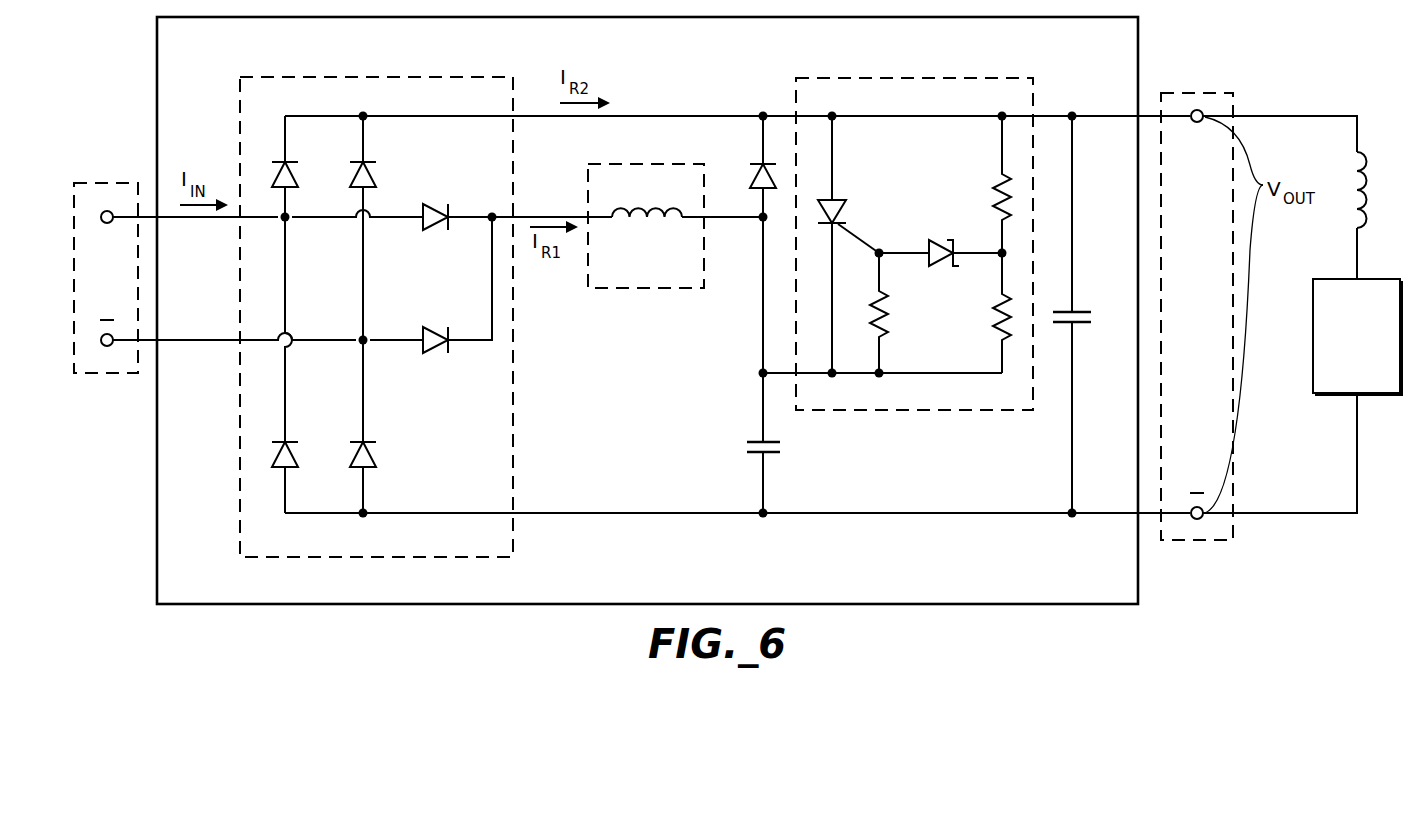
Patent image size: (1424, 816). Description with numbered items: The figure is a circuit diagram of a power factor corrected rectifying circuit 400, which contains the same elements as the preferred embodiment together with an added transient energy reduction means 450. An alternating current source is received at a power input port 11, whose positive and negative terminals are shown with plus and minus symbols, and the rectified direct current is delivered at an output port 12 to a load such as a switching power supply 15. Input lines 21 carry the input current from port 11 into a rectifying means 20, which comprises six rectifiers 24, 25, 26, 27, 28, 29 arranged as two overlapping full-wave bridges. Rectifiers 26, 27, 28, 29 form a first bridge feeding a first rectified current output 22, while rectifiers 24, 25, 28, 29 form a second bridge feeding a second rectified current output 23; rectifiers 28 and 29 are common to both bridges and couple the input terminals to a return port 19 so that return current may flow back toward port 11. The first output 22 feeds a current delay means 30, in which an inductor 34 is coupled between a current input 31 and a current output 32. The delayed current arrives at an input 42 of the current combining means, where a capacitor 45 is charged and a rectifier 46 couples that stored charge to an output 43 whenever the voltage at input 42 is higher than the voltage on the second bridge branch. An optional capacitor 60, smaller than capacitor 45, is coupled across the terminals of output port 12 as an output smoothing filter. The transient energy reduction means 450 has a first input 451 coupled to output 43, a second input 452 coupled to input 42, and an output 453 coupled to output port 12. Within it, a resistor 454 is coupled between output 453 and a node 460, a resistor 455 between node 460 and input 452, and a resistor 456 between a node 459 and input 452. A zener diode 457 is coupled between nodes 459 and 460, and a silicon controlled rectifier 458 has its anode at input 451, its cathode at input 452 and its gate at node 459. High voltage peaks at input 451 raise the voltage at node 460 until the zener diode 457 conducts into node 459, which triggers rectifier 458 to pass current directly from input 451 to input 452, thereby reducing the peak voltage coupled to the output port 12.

The power factor corrected rectifying circuit 400 is at (148, 575).
The power input port 11 is at (127, 172).
The output port 12 is at (1192, 80).
The switching power supply 15 is at (1340, 279).
The return port 19 is at (513, 512).
The rectifying means 20 is at (266, 66).
The input lines 21 is at (232, 338).
The first rectified current output 22 is at (513, 215).
The second rectified current output 23 is at (513, 114).
The rectifier 24 is at (289, 161).
The rectifier 25 is at (367, 161).
The rectifier 26 is at (428, 204).
The rectifier 27 is at (428, 327).
The rectifier 28 is at (367, 441).
The rectifier 29 is at (289, 441).
The current delay means 30 is at (620, 152).
The current input 31 is at (588, 216).
The current output 32 is at (704, 220).
The inductor 34 is at (640, 221).
The input 42 is at (761, 371).
The output 43 is at (762, 113).
The capacitor 45 is at (758, 441).
The rectifier 46 is at (760, 163).
The capacitor 60 is at (1075, 314).
The transient energy reduction means 450 is at (880, 66).
The first input 451 is at (795, 112).
The second input 452 is at (834, 377).
The output 453 is at (1034, 116).
The resistor 454 is at (1000, 184).
The resistor 455 is at (998, 302).
The resistor 456 is at (886, 328).
The zener diode 457 is at (955, 239).
The silicon controlled rectifier 458 is at (836, 200).
The node 459 is at (879, 250).
The node 460 is at (1000, 258).